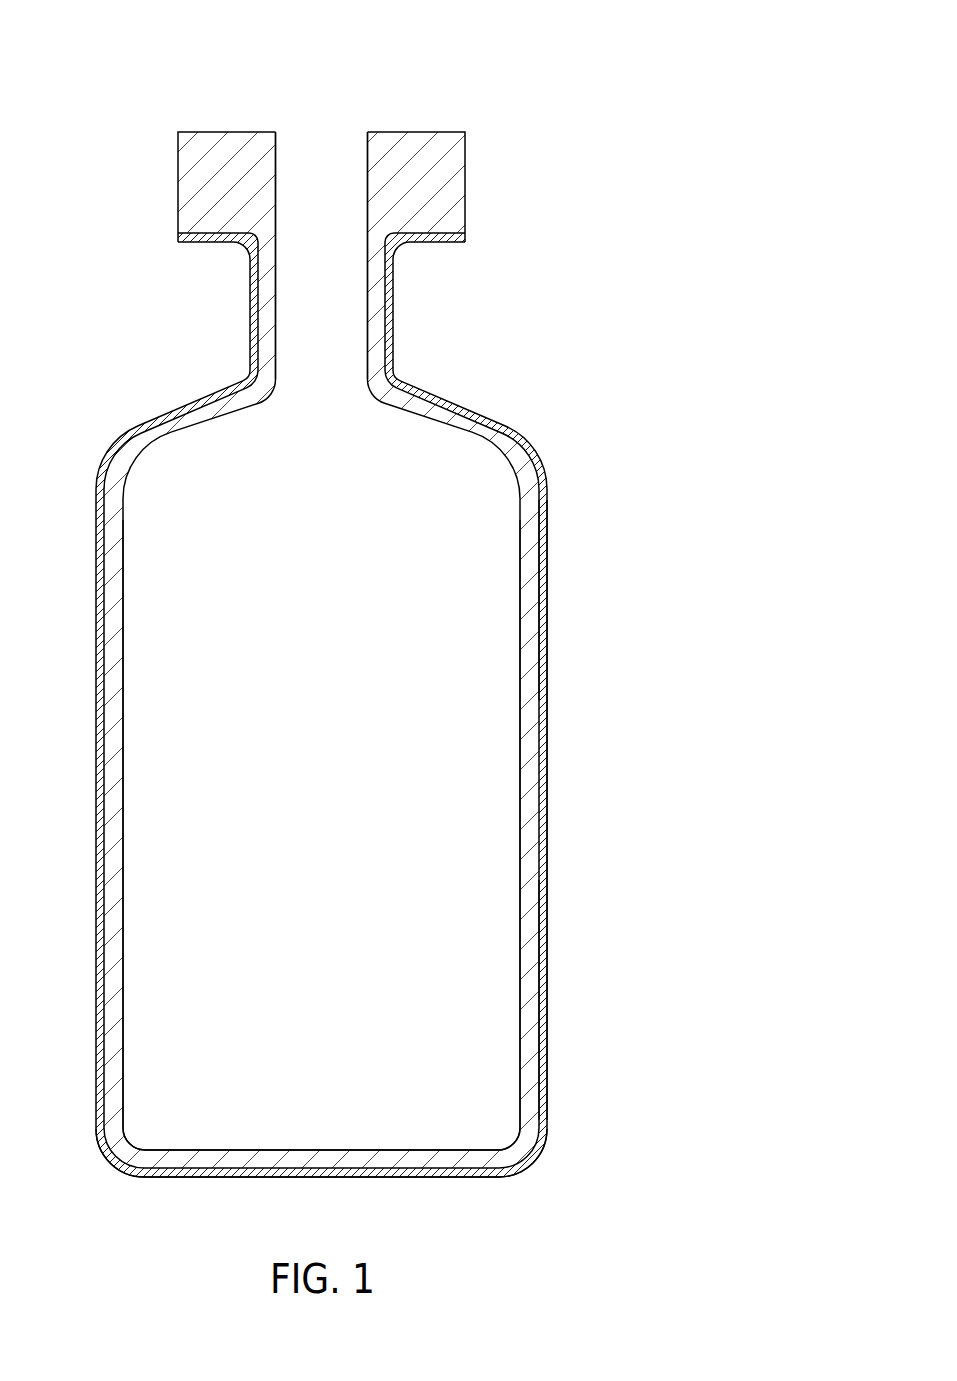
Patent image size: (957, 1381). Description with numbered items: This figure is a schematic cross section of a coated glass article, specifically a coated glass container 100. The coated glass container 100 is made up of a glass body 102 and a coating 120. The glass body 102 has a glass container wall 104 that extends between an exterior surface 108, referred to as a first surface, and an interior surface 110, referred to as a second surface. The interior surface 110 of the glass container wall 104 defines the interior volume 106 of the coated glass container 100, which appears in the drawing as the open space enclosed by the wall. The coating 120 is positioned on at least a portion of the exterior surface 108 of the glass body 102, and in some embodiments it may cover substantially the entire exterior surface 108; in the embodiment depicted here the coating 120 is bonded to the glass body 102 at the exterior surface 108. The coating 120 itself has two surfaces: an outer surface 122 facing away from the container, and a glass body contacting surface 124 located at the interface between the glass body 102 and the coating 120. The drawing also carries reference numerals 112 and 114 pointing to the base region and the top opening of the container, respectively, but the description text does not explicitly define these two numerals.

The coated glass container 100 is at (410, 662).
The glass body 102 is at (379, 170).
The glass container wall 104 is at (526, 867).
The interior volume 106 is at (345, 724).
The exterior surface 108 is at (540, 776).
The interior surface 110 is at (521, 805).
The base 112 is at (321, 1212).
The opening 114 is at (336, 197).
The coating 120 is at (540, 933).
The outer surface 122 is at (548, 710).
The glass body contacting surface 124 is at (539, 646).